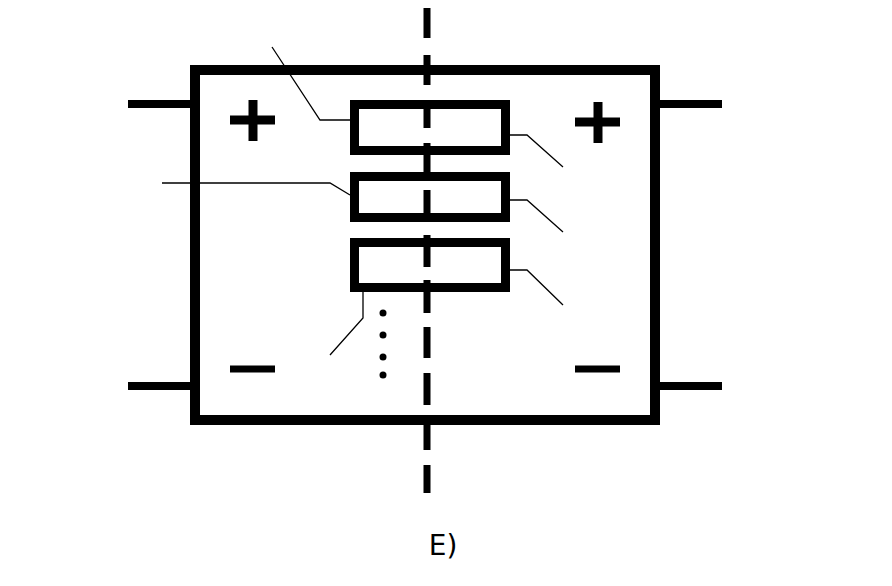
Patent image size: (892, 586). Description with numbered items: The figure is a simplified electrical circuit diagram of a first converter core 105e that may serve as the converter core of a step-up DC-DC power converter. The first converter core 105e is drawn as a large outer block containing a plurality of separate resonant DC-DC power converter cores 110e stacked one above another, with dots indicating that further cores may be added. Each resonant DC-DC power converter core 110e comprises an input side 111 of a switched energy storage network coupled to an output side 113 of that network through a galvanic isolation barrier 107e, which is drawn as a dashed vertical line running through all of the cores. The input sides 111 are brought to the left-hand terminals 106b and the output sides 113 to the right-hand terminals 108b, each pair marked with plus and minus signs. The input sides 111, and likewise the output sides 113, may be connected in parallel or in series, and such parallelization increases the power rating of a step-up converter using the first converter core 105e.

The first converter core 105e is at (425, 215).
The input side terminals 106b is at (160, 263).
The output side terminals 108b is at (790, 262).
The galvanic isolation barrier 107e is at (480, 263).
The resonant DC-DC power converter core 110e is at (350, 145).
The input side 111 is at (372, 140).
The output side 113 is at (449, 138).